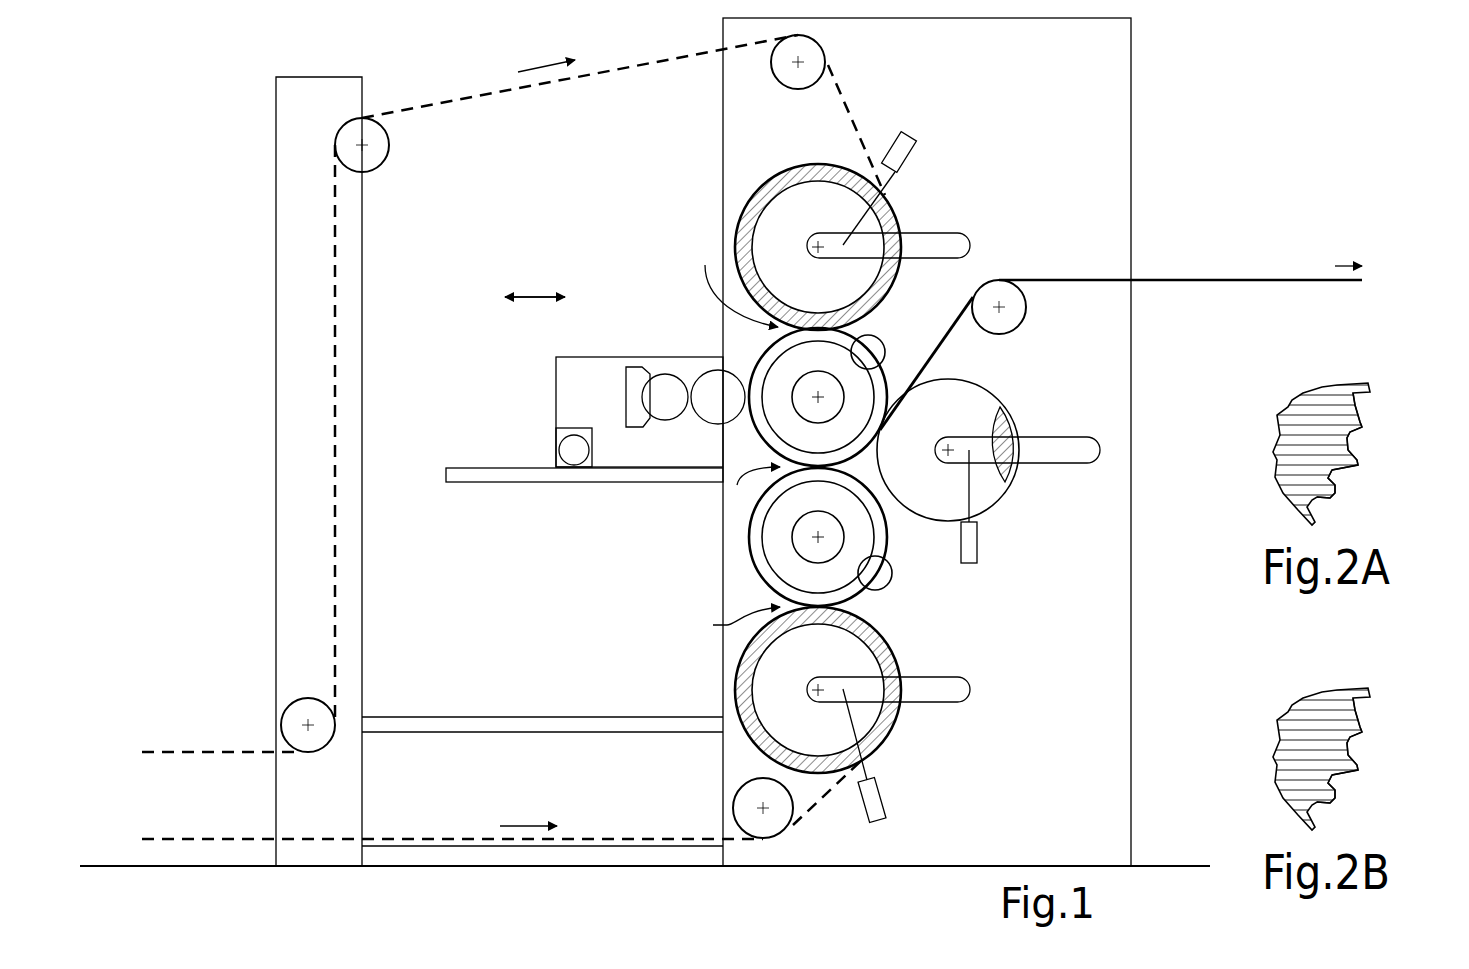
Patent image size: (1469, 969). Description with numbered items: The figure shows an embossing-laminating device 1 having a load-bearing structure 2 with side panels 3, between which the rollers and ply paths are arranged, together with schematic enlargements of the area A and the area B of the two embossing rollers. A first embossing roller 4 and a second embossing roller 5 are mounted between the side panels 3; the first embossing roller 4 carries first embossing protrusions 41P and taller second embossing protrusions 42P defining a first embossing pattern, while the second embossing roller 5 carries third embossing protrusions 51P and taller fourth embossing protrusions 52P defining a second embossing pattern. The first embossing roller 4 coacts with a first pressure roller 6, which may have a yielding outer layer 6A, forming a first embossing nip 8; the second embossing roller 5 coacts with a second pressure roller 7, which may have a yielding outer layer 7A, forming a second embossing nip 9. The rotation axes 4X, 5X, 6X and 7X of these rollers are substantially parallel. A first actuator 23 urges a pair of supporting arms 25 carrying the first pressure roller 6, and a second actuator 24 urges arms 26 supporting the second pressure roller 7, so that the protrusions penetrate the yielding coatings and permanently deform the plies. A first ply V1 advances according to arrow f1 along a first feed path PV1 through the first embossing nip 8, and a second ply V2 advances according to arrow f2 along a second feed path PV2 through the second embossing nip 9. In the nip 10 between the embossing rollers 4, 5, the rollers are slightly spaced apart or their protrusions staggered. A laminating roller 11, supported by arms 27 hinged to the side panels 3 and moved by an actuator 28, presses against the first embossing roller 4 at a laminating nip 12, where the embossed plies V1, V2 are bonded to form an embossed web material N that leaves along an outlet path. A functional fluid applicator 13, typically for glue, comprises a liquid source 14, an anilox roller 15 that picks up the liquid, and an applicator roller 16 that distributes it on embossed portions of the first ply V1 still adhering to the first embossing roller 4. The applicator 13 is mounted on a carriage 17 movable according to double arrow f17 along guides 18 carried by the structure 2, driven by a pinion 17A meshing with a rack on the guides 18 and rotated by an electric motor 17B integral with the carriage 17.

In FIG. 1, the embossing-laminating device 1 is at (208, 188).
In FIG. 1, the load-bearing structure 2 is at (167, 870).
In FIG. 1, the side panels 3 is at (1131, 128).
In FIG. 2A, the first embossing roller 4 is at (1337, 402).
In FIG. 1, the rotation axis of first embossing roller 4X is at (816, 396).
In FIG. 1, the second embossing roller 5 is at (755, 545).
In FIG. 2B, the second embossing roller 5 is at (1321, 754).
In FIG. 1, the rotation axis of second embossing roller 5X is at (816, 536).
In FIG. 1, the first pressure roller 6 is at (848, 182).
In FIG. 1, the outer layer of first pressure roller 6A is at (778, 174).
In FIG. 1, the rotation axis of first pressure roller 6X is at (820, 243).
In FIG. 1, the second pressure roller 7 is at (878, 645).
In FIG. 1, the outer layer of second pressure roller 7A is at (740, 652).
In FIG. 1, the rotation axis of second pressure roller 7X is at (816, 691).
In FIG. 1, the first embossing nip 8 is at (739, 284).
In FIG. 1, the second embossing nip 9 is at (739, 621).
In FIG. 1, the nip between embossing rollers 10 is at (753, 485).
In FIG. 1, the laminating roller 11 is at (1012, 470).
In FIG. 1, the laminating nip 12 is at (893, 385).
In FIG. 1, the functional fluid applicator 13 is at (625, 397).
In FIG. 1, the liquid source 14 is at (633, 430).
In FIG. 1, the anilox roller 15 is at (658, 380).
In FIG. 1, the cliché roller or applicator roller 16 is at (703, 380).
In FIG. 1, the slide or carriage 17 is at (572, 378).
In FIG. 1, the pinion 17A is at (578, 460).
In FIG. 1, the electric motor 17B is at (592, 438).
In FIG. 1, the guides 18 is at (531, 476).
In FIG. 1, the first actuator 23 is at (913, 142).
In FIG. 1, the second actuator 24 is at (876, 800).
In FIG. 1, the first slot 25 is at (932, 242).
In FIG. 1, the arms supporting second pressure roller 26 is at (928, 683).
In FIG. 1, the arms supporting laminating roller 27 is at (1030, 445).
In FIG. 1, the actuator of laminating roller 28 is at (982, 543).
In FIG. 2A, the first embossing protrusions 41P is at (1362, 426).
In FIG. 2A, the second embossing protrusions 42P is at (1370, 388).
In FIG. 2B, the third embossing protrusions 51P is at (1380, 779).
In FIG. 2B, the fourth embossing protrusions 52P is at (1388, 740).
In FIG. 1, the area of first embossing roller A is at (880, 336).
In FIG. 1, the area of second embossing roller B is at (895, 580).
In FIG. 1, the embossed web material N is at (956, 318).
In FIG. 1, the first ply V1 is at (437, 104).
In FIG. 1, the second ply V2 is at (415, 838).
In FIG. 1, the advance direction of first ply f1 is at (537, 68).
In FIG. 1, the advance direction of second ply f2 is at (527, 826).
In FIG. 1, the movement direction of carriage f17 is at (535, 297).
In FIG. 1, the first feed path PV1 is at (682, 60).
In FIG. 1, the second feed path PV2 is at (813, 818).